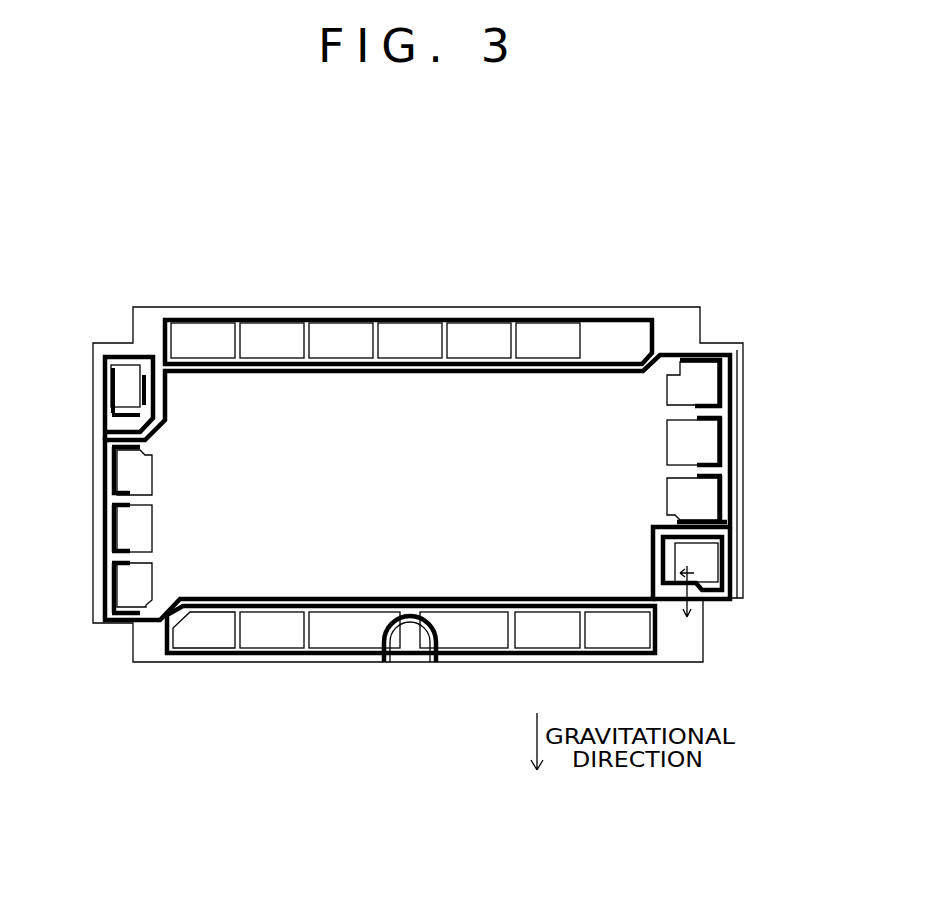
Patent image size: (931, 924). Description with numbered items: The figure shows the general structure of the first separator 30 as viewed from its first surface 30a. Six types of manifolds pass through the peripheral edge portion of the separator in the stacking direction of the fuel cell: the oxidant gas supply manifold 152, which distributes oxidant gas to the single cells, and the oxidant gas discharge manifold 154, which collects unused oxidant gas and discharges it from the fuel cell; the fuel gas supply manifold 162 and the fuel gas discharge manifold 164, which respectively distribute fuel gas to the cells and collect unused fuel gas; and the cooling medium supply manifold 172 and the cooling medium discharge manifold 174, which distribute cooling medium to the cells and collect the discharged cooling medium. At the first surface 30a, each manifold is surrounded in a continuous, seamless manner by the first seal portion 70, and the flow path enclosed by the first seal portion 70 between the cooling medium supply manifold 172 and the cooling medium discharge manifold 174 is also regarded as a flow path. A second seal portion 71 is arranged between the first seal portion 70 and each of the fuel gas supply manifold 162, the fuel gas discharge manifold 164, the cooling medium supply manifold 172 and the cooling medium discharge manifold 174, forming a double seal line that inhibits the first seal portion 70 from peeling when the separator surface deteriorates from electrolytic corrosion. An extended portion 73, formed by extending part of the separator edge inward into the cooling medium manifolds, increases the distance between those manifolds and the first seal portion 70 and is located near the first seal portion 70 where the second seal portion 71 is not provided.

The first separator 30 is at (120, 274).
The first surface 30a is at (657, 323).
The first seal portion 70 is at (122, 377).
The second seal portion 71 is at (113, 397).
The extended portion 73 is at (112, 456).
The oxidant gas supply manifold 152 is at (205, 637).
The oxidant gas discharge manifold 154 is at (203, 340).
The fuel gas supply manifold 162 is at (127, 417).
The fuel gas discharge manifold 164 is at (710, 588).
The cooling medium supply manifold 172 is at (145, 478).
The cooling medium discharge manifold 174 is at (680, 390).